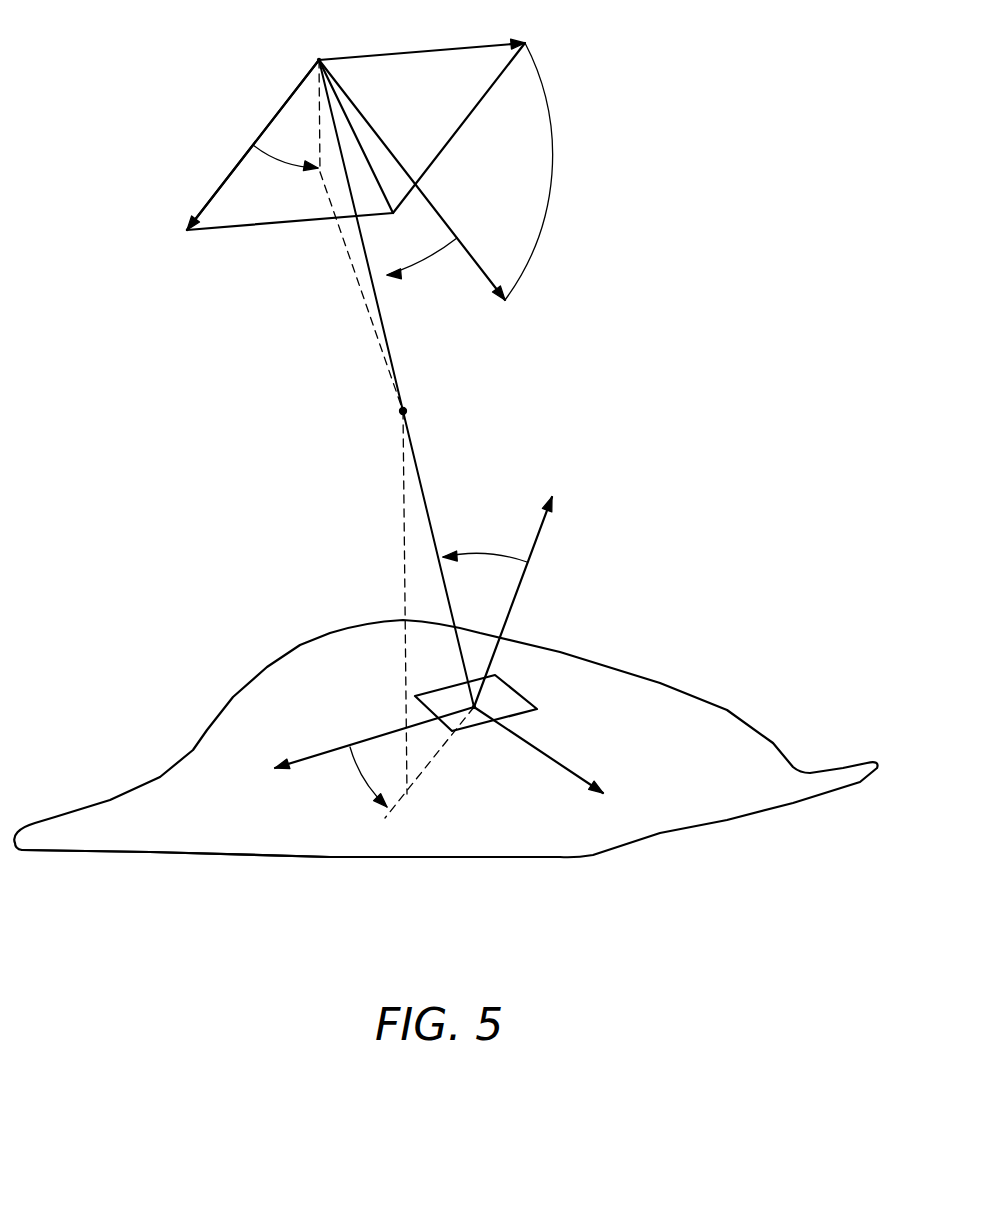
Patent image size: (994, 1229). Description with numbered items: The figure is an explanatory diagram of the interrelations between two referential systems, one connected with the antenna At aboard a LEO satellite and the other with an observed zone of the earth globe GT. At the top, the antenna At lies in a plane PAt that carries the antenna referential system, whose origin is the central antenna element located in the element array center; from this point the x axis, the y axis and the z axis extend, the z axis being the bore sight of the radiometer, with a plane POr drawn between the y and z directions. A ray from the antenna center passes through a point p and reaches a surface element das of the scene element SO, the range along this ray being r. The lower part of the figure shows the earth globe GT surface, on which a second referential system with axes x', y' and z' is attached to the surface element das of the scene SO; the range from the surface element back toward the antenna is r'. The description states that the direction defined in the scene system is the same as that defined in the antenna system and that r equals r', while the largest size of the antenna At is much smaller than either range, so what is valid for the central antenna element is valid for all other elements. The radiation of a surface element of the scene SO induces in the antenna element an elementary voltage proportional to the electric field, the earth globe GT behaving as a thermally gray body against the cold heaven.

The antenna At is at (273, 108).
The antenna plane PAt is at (258, 212).
The X axis of antenna referential system x is at (245, 151).
The Y axis of antenna referential system y is at (425, 35).
The orientation plane POr is at (538, 177).
The Z axis (bore sight) of antenna referential system z is at (414, 195).
The range from antenna r is at (356, 235).
The point on ray p is at (410, 411).
The range from scene element r' is at (412, 614).
The surface frame z axis z' is at (525, 597).
The surface frame x axis x' is at (361, 746).
The surface frame y axis y' is at (549, 758).
The surface area element das is at (497, 703).
The earth globe GT is at (710, 735).
The scene element SO is at (483, 815).